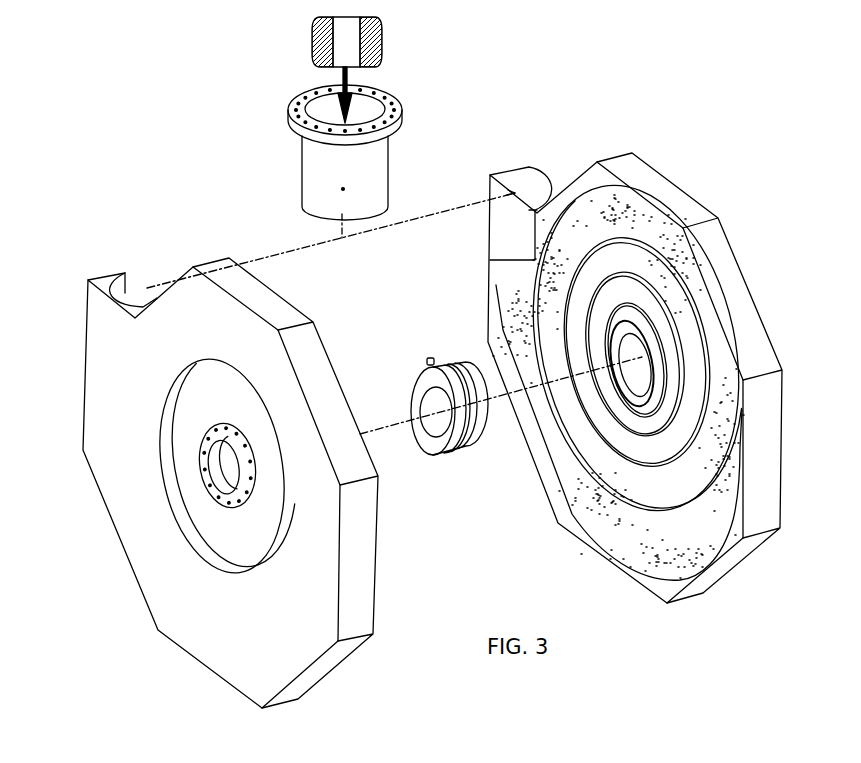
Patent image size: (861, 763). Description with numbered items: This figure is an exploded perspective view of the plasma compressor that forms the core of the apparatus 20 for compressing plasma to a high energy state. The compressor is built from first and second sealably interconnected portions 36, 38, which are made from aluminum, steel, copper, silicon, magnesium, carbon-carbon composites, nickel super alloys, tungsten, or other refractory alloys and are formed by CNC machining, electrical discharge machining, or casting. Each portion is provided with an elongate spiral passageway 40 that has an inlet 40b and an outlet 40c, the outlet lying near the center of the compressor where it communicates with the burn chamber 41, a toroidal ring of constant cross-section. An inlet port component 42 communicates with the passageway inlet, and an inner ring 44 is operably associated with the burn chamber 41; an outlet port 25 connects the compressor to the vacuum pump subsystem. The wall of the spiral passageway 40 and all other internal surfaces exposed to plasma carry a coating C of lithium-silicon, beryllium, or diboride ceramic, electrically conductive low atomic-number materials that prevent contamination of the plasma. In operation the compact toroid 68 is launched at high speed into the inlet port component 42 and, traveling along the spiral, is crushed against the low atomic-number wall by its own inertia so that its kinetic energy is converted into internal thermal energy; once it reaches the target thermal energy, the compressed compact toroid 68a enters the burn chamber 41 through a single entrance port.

The apparatus for compressing plasma 20 is at (428, 181).
The outlet port 25 is at (218, 472).
The first portion 36 is at (733, 295).
The second portion 38 is at (125, 432).
The elongate spiral passageway 40 is at (602, 200).
The inlet 40b is at (132, 292).
The outlet 40c is at (627, 400).
The burn chamber 41 is at (462, 448).
The inlet port component 42 is at (302, 165).
The inner ring 44 is at (420, 375).
The compact toroid (CT) 68 is at (313, 40).
The compressed compact toroid 68a is at (428, 357).
The coating C is at (630, 215).